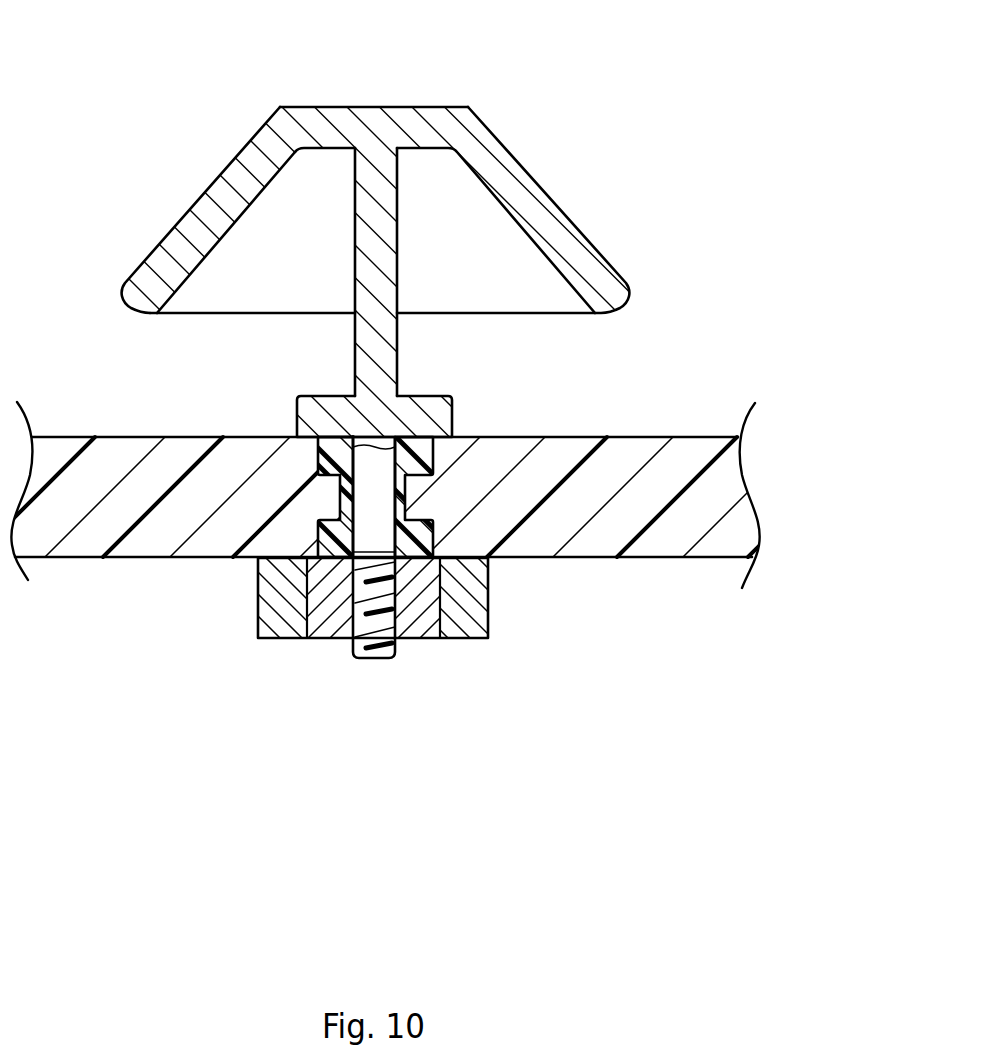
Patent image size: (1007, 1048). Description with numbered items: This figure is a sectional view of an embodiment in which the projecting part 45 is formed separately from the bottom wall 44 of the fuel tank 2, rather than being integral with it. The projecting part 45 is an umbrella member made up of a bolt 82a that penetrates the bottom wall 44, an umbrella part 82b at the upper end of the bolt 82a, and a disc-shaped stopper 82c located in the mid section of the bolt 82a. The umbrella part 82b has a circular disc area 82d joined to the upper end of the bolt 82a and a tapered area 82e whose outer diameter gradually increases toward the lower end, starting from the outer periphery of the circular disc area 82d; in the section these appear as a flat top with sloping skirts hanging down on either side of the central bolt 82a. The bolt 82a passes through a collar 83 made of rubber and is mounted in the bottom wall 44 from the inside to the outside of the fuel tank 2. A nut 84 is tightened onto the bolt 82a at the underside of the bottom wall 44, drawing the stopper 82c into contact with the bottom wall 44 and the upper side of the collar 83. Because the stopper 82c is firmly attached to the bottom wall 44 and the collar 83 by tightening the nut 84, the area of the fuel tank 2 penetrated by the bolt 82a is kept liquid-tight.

The projecting part 45 is at (562, 208).
The bolt 82a is at (368, 660).
The umbrella part 82b is at (235, 17).
The disc-shaped stopper 82c is at (297, 420).
The circular disc area 82d is at (332, 112).
The tapered area 82e is at (232, 180).
The bottom wall 44 is at (678, 472).
The fuel tank 2 is at (762, 537).
The collar 83 is at (425, 540).
The nut 84 is at (412, 625).